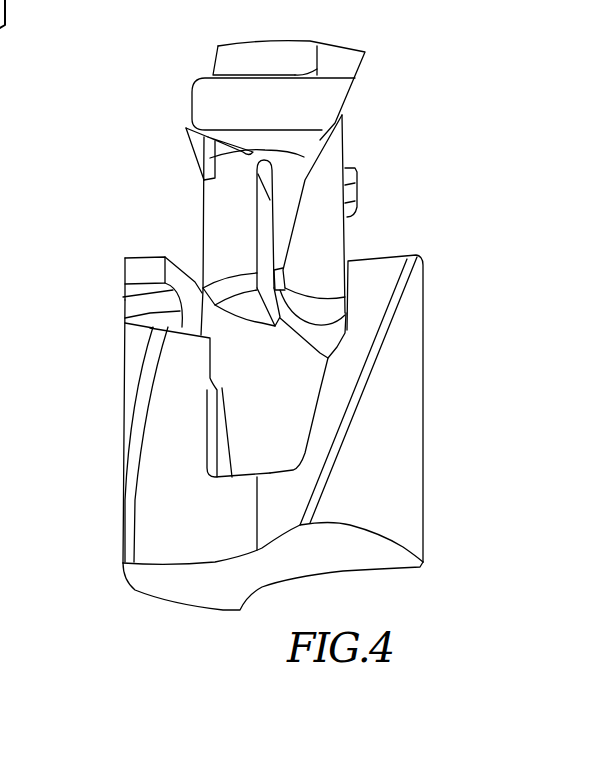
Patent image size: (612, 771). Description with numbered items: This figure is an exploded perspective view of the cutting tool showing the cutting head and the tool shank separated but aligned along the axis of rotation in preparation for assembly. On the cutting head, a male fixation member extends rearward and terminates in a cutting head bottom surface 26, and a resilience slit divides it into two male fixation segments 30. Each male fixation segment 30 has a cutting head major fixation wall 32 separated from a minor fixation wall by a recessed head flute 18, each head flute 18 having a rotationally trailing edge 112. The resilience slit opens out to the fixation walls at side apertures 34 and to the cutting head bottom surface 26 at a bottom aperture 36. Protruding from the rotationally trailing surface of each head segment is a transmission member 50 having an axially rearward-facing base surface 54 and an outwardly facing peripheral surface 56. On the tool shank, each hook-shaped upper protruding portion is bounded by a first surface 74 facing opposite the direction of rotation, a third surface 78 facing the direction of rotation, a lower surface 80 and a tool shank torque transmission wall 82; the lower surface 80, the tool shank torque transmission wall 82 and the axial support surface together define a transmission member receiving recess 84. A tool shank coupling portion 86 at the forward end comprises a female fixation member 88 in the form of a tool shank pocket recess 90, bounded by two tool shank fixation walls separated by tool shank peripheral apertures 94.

The head flute 18 is at (334, 138).
The cutting head bottom surface 26 is at (327, 308).
The male fixation segment 30 is at (191, 222).
The cutting head major fixation wall 32 is at (222, 189).
The side aperture 34 is at (262, 218).
The bottom aperture 36 is at (328, 358).
The transmission member 50 is at (184, 83).
The base surface 54 is at (300, 140).
The outwardly facing peripheral surface 56 is at (203, 108).
The first surface 74 is at (384, 278).
The third surface 78 is at (143, 271).
The lower surface 80 is at (150, 285).
The tool shank torque transmission wall 82 is at (130, 322).
The transmission member receiving recess 84 is at (143, 323).
The tool shank coupling portion 86 is at (108, 417).
The female fixation member 88 is at (239, 415).
The tool shank pocket recess 90 is at (249, 433).
The tool shank peripheral aperture 94 is at (325, 421).
The rotationally trailing edge 112 is at (283, 280).